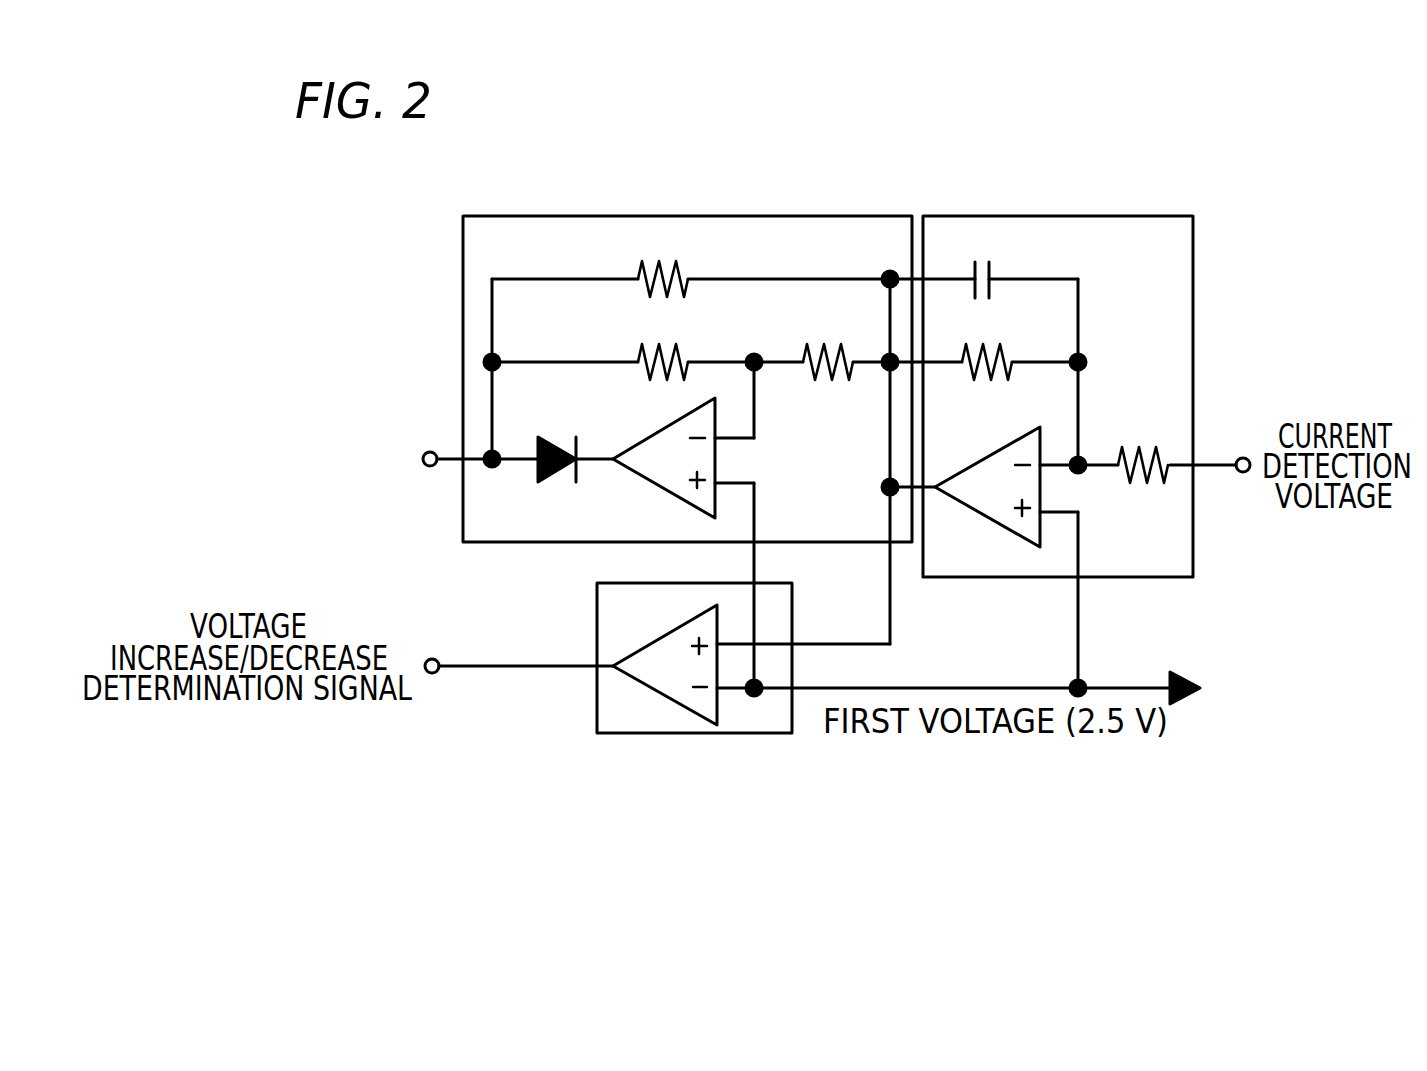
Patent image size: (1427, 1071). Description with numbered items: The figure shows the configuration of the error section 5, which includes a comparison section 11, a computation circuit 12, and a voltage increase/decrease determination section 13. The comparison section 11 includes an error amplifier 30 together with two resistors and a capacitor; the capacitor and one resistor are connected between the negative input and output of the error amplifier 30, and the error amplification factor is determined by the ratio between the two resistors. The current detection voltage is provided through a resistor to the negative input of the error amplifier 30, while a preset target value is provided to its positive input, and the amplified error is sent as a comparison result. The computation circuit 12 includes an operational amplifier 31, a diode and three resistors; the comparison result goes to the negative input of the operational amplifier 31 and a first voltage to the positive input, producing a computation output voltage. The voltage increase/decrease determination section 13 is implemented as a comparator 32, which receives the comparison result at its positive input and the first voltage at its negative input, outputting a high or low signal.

The error section 5 is at (857, 195).
The comparison section 11 is at (1193, 547).
The computation circuit 12 is at (483, 542).
The voltage increase/decrease determination section 13 is at (750, 733).
The error amplifier 30 is at (993, 527).
The operational amplifier 31 is at (650, 483).
The comparator 32 is at (682, 707).